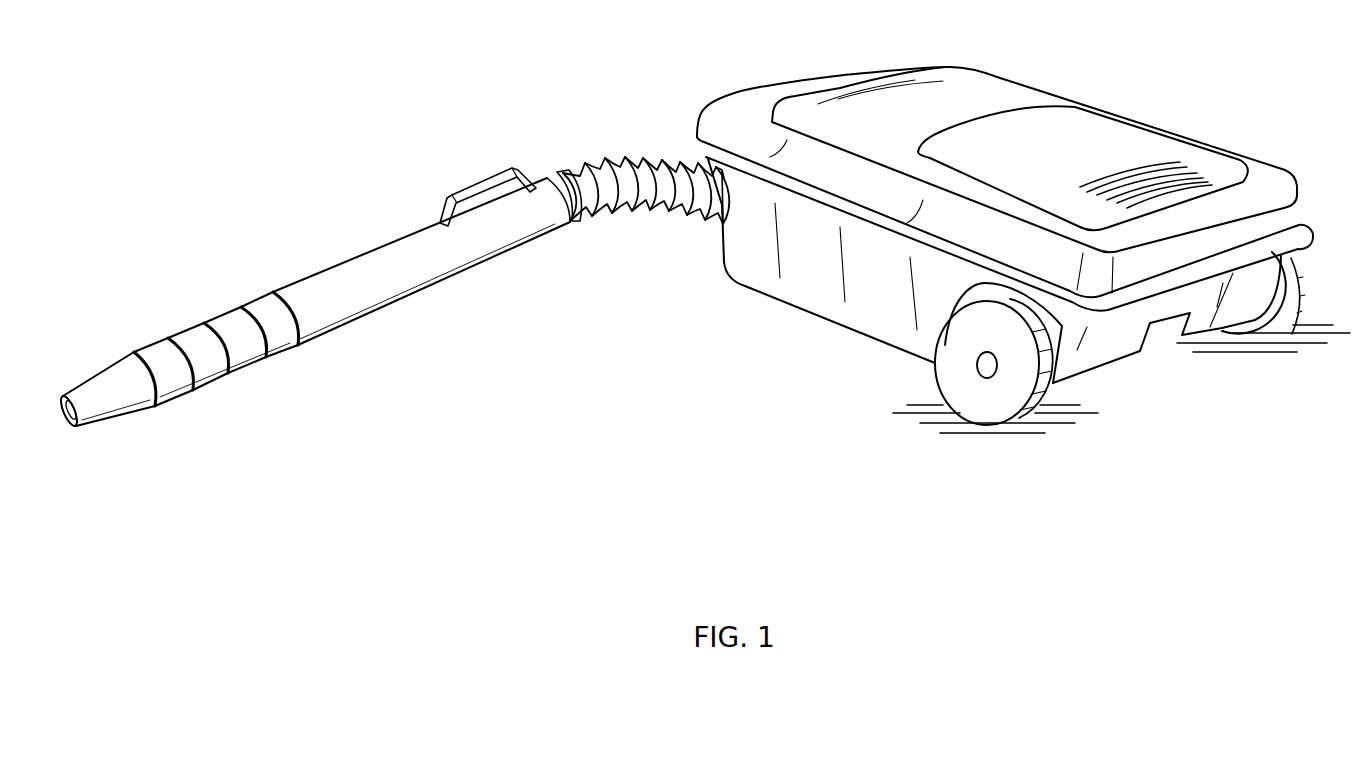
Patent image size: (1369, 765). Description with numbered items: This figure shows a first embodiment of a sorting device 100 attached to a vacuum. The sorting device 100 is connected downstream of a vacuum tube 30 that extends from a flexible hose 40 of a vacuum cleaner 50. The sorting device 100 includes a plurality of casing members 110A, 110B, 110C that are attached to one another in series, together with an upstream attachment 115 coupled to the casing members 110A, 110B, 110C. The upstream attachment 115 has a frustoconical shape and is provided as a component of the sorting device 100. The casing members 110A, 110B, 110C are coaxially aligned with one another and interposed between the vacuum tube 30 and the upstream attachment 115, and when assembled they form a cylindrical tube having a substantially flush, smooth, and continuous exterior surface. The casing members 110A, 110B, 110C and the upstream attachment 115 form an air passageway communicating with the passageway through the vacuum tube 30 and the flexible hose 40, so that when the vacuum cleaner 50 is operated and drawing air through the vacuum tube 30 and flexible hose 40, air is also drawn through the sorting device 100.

The sorting device 100 is at (176, 321).
The upstream attachment 115 is at (120, 377).
The casing member 110A is at (213, 380).
The casing member 110B is at (245, 358).
The casing member 110C is at (260, 307).
The vacuum tube 30 is at (418, 270).
The flexible hose 40 is at (677, 200).
The vacuum cleaner 50 is at (990, 97).